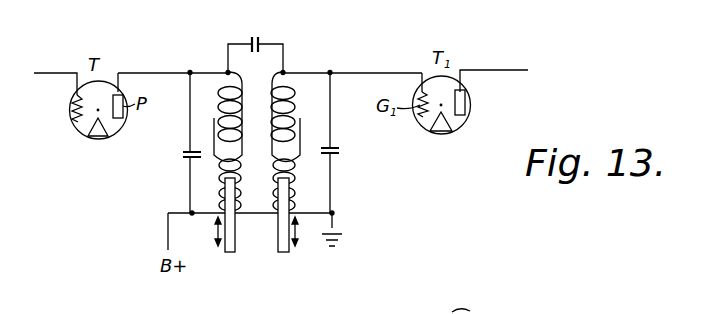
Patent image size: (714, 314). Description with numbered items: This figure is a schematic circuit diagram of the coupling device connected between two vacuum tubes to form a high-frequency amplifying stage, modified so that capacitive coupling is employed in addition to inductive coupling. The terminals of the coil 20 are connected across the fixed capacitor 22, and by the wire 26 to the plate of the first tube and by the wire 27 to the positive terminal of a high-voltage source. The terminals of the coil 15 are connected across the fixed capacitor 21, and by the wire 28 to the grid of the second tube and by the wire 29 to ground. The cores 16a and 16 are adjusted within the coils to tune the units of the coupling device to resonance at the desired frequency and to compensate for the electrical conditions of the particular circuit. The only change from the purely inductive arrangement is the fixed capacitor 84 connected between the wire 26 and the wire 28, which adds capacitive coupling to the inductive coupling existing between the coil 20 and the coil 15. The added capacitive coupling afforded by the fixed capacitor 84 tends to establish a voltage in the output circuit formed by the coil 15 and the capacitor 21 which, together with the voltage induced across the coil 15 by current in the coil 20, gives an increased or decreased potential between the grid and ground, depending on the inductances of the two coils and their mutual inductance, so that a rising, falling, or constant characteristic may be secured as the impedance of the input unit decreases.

The wire 26 is at (161, 68).
The fixed capacitor 84 is at (260, 42).
The wire 28 is at (368, 73).
The coil 20 is at (217, 152).
The coil 15 is at (292, 124).
The fixed capacitor 22 is at (183, 155).
The fixed capacitor 21 is at (340, 151).
The wire 27 is at (168, 231).
The wire 29 is at (335, 217).
The core 16a is at (231, 252).
The core 16 is at (282, 252).